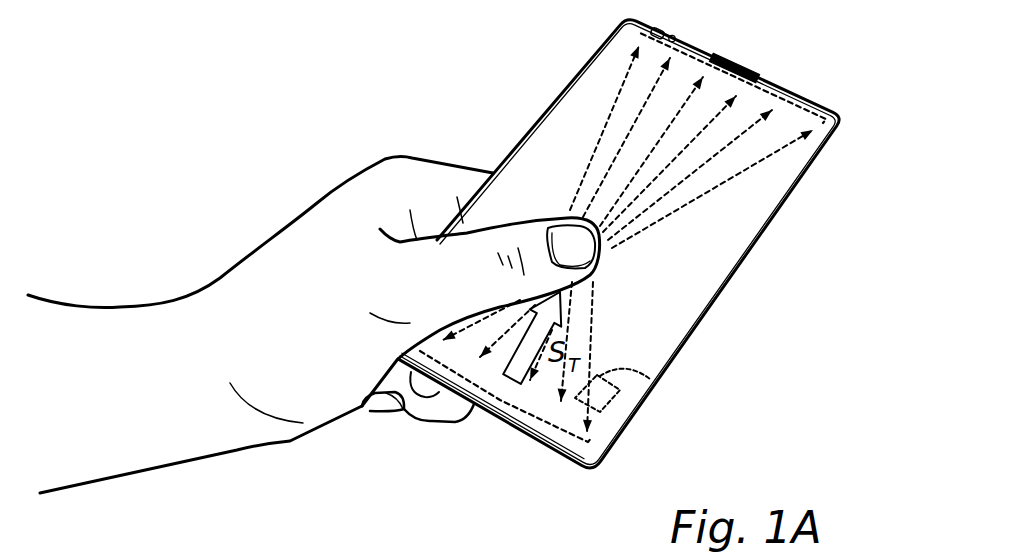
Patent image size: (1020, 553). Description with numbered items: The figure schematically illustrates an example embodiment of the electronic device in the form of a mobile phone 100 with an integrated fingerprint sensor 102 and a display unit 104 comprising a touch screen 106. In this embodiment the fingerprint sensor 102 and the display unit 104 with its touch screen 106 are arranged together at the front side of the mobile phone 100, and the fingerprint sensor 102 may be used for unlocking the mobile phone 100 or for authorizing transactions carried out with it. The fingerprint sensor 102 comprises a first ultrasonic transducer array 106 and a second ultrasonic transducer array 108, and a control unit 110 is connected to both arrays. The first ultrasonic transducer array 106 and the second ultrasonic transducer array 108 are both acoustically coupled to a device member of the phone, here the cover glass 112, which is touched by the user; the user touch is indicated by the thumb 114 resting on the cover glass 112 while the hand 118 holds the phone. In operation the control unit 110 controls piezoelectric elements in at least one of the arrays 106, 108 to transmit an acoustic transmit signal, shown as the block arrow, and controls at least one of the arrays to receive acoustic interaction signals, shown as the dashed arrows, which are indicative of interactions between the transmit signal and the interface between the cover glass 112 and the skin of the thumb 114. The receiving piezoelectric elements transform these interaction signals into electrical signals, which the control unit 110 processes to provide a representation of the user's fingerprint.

The mobile phone 100 is at (799, 245).
The fingerprint sensor 102 is at (647, 397).
The display unit 104 is at (693, 297).
The first ultrasonic transducer array 106 is at (546, 425).
The second ultrasonic transducer array 108 is at (792, 90).
The control unit 110 is at (645, 377).
The cover glass 112 is at (540, 140).
The thumb 114 is at (558, 232).
The hand 118 is at (260, 355).